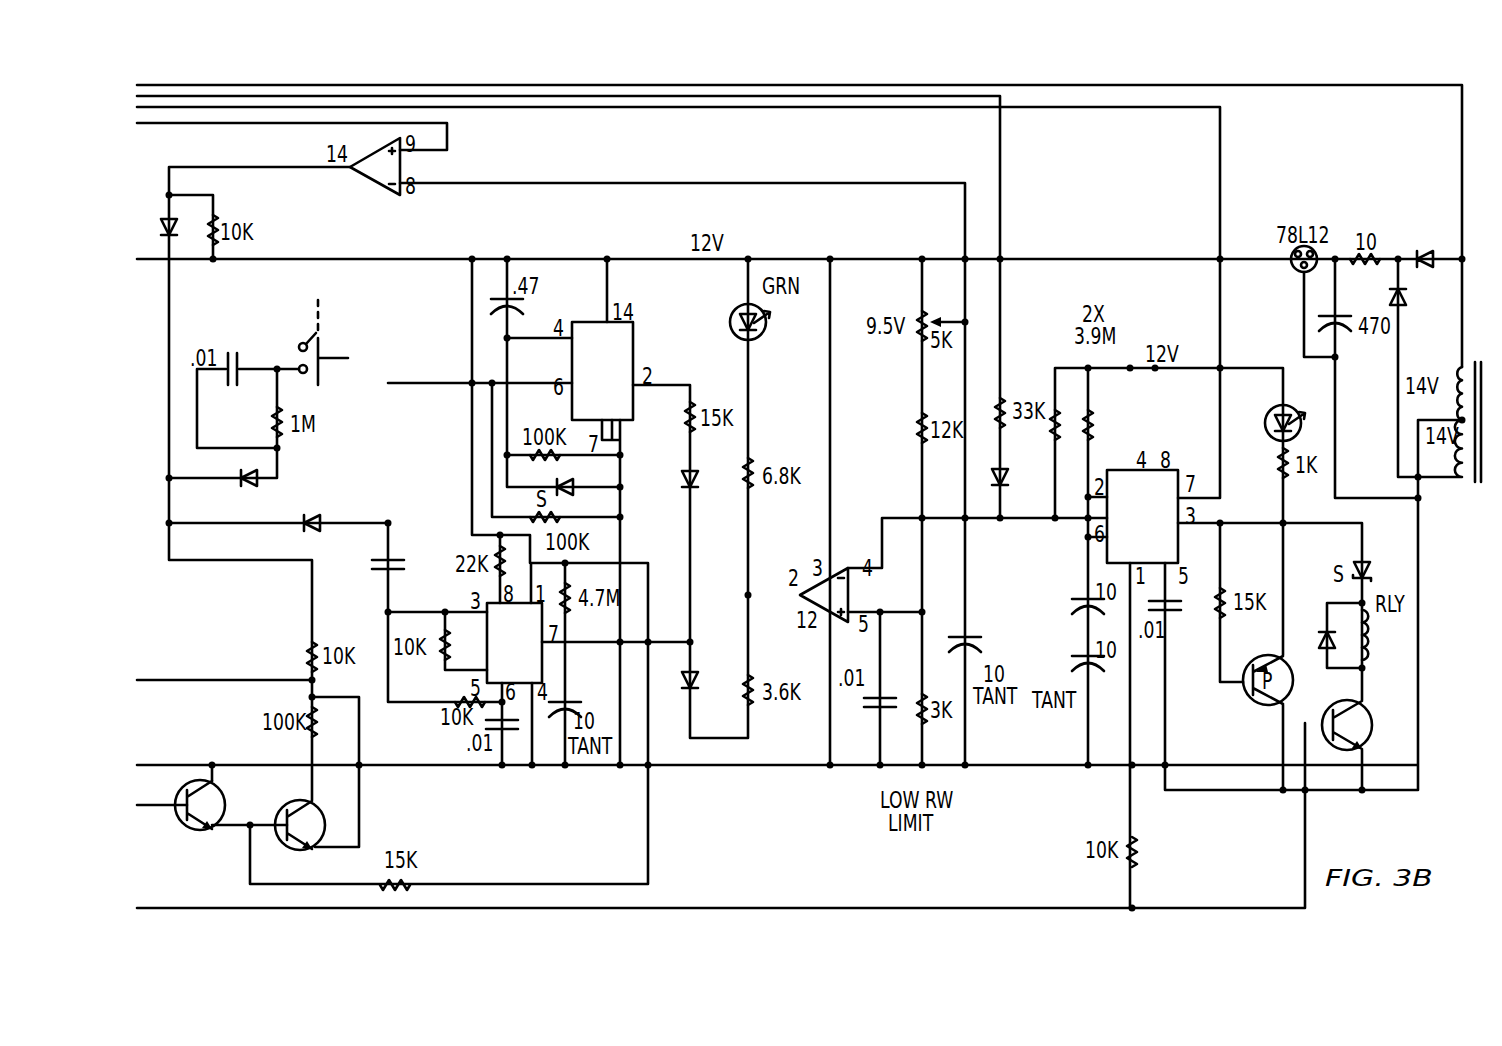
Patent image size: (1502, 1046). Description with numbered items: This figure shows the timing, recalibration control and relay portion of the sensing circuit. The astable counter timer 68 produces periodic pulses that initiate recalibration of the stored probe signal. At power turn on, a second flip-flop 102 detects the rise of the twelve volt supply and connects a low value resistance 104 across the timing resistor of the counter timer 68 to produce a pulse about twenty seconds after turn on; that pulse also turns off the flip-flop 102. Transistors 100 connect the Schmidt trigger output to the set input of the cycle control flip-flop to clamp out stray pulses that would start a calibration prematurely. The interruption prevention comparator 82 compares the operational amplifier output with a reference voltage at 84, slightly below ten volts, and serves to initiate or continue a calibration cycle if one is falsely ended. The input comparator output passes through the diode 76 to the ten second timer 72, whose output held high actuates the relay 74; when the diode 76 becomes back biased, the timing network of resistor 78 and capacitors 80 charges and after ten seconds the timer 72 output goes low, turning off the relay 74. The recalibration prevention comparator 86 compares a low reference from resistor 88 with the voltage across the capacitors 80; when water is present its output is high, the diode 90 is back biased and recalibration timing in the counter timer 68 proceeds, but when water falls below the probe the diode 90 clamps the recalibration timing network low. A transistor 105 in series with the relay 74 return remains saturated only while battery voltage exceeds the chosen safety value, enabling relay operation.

The interruption prevention comparator 82 is at (372, 196).
The second flip-flop 102 is at (633, 330).
The low value resistance 104 is at (690, 403).
The reference voltage 84 is at (922, 312).
The resistor 78 is at (1000, 398).
The diode 76 is at (1004, 480).
The recalibration prevention comparator 86 is at (882, 560).
The resistor 88 is at (920, 698).
The diode 90 is at (692, 670).
The counter timer 68 is at (580, 652).
The capacitors 80 is at (1080, 610).
The ten second timer 72 is at (1210, 528).
The relay 74 is at (1370, 635).
The transistor 105 is at (1368, 720).
The transistors 100 is at (250, 828).